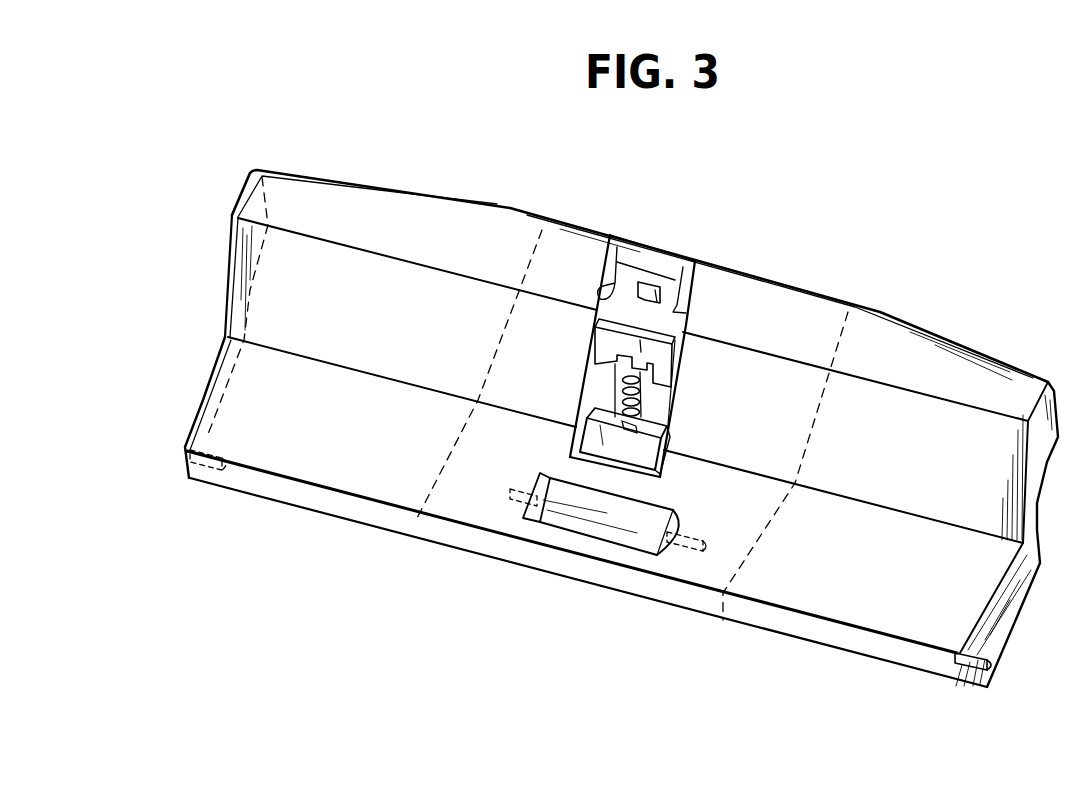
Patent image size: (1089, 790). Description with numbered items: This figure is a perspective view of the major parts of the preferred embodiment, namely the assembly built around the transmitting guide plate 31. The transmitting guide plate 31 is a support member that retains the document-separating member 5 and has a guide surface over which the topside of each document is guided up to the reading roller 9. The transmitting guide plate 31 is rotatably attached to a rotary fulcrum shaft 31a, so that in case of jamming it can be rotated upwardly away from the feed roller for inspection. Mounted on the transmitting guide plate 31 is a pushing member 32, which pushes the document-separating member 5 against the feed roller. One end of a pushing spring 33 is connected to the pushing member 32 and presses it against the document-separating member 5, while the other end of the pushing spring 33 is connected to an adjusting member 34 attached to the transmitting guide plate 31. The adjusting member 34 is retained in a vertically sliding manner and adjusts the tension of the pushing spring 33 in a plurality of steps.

The document-separating member 5 is at (632, 278).
The reading roller 9 is at (520, 484).
The transmitting guide plate 31 is at (765, 297).
The rotary fulcrum shaft 31a is at (183, 446).
The pushing member 32 is at (580, 437).
The pushing spring 33 is at (645, 397).
The adjusting member 34 is at (603, 337).